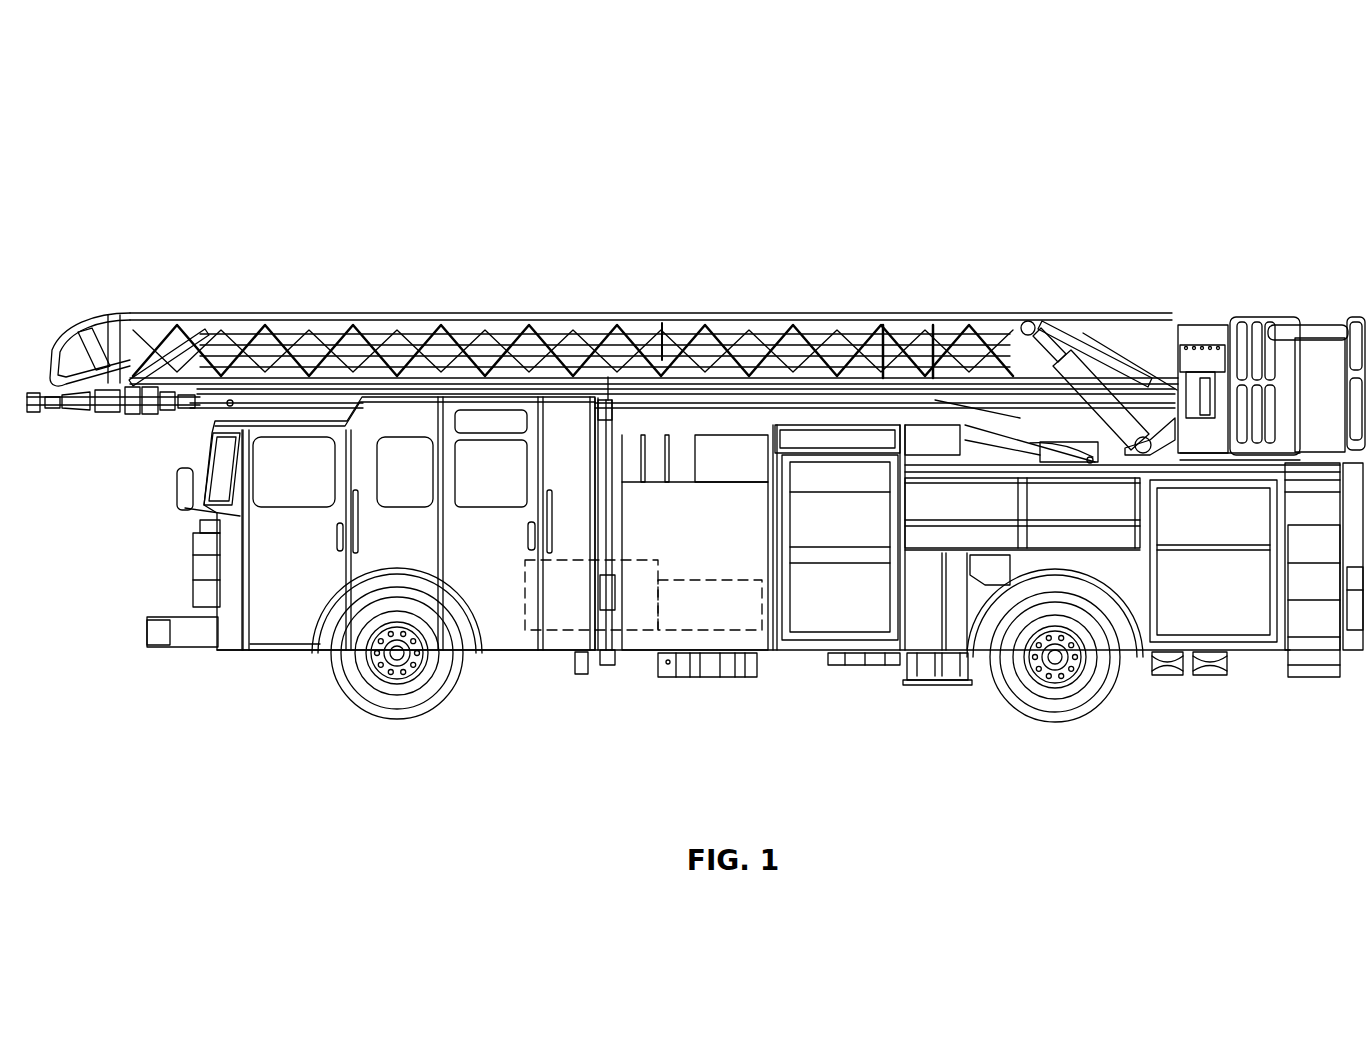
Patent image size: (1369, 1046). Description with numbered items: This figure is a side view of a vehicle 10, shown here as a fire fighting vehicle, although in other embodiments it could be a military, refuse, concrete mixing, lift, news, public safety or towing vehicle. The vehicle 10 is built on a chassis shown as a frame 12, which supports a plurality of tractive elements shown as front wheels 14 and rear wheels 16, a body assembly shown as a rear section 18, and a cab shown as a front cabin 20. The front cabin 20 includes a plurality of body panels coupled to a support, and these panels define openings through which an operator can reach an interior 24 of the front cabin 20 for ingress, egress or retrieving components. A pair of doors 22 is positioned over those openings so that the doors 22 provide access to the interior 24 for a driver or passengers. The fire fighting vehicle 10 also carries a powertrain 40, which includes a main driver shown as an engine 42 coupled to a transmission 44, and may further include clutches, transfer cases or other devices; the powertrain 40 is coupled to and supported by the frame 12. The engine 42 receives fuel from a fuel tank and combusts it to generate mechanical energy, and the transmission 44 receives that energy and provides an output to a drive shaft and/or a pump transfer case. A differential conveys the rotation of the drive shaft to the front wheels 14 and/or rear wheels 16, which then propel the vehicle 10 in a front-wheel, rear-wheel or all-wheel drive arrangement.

The vehicle 10 is at (142, 157).
The frame 12 is at (340, 612).
The front wheels 14 is at (378, 707).
The rear wheels 16 is at (1046, 708).
The rear section 18 is at (733, 417).
The front cabin 20 is at (400, 417).
The doors 22 is at (262, 636).
The interior 24 is at (285, 486).
The powertrain 40 is at (634, 705).
The engine 42 is at (562, 633).
The transmission 44 is at (708, 633).